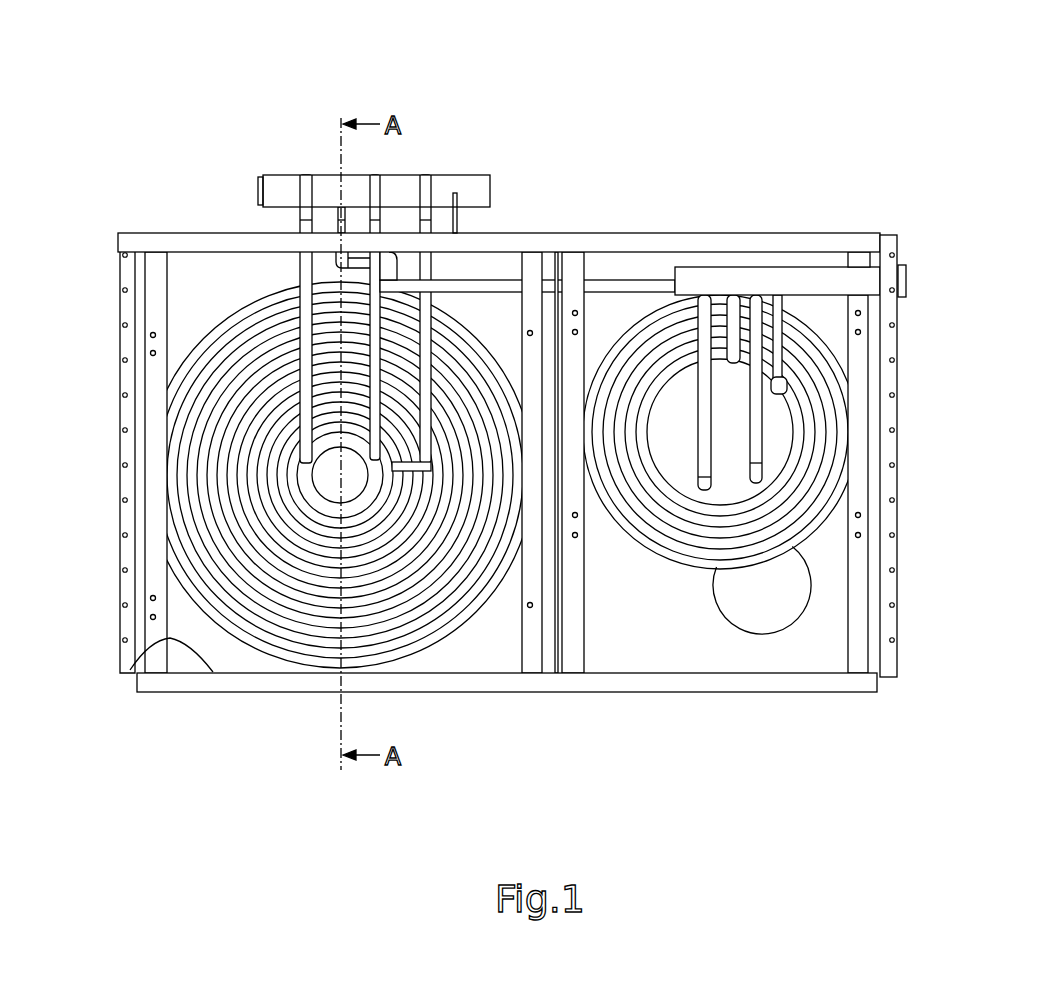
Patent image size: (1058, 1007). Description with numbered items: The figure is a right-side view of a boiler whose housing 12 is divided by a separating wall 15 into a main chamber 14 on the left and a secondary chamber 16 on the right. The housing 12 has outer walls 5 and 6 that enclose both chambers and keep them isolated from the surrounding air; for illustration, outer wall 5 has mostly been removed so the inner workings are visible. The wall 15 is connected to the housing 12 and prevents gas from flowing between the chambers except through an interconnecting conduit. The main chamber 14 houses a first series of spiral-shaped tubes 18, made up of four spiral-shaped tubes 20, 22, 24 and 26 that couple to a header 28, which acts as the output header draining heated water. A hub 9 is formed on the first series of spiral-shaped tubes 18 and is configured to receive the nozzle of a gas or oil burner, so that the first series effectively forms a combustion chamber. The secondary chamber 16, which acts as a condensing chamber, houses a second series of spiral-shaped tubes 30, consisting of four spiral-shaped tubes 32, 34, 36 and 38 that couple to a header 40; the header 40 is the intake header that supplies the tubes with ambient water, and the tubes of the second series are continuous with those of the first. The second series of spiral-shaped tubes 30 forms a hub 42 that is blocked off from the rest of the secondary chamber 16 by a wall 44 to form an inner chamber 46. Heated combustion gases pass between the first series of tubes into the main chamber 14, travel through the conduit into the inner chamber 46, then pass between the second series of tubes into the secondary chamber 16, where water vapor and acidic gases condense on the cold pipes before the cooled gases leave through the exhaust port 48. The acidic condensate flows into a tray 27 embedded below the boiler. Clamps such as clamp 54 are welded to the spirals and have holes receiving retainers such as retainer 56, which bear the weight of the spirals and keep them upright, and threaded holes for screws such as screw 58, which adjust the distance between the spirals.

The outer wall 5 is at (193, 667).
The outer wall 6 is at (630, 623).
The hub 9 is at (323, 504).
The housing 12 is at (882, 237).
The main chamber 14 is at (187, 625).
The wall 15 is at (560, 607).
The secondary chamber 16 is at (822, 650).
The first series of spiral-shaped tubes 18 is at (252, 390).
The spiral-shaped tube 20 is at (428, 197).
The spiral-shaped tube 22 is at (378, 200).
The spiral-shaped tube 24 is at (341, 250).
The spiral-shaped tube 26 is at (298, 283).
The tray 27 is at (475, 690).
The header 28 is at (273, 185).
The second series of spiral-shaped tubes 30 is at (662, 330).
The spiral-shaped tube 32 is at (784, 392).
The spiral-shaped tube 34 is at (757, 457).
The spiral-shaped tube 36 is at (740, 317).
The spiral-shaped tube 38 is at (704, 300).
The header 40 is at (813, 283).
The hub 42 is at (653, 390).
The wall 44 is at (788, 433).
The inner chamber 46 is at (732, 445).
The exhaust port 48 is at (750, 600).
The clamp 54 is at (172, 583).
The retainer 56 is at (152, 335).
The screw 58 is at (153, 355).